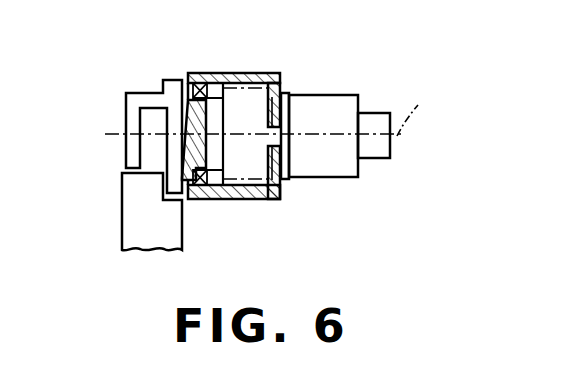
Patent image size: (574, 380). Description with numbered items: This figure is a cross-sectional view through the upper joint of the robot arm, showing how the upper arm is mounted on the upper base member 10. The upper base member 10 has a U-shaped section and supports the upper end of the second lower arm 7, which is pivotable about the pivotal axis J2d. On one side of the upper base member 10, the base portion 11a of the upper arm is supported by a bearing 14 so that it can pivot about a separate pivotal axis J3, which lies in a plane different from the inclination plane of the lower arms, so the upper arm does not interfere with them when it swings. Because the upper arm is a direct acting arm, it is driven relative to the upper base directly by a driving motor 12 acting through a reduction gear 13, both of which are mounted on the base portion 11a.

The second lower arm 7 is at (122, 215).
The upper base member 10 is at (138, 92).
The base portion of upper arm 11a is at (233, 73).
The driving motor 12 is at (328, 177).
The reduction gear 13 is at (237, 173).
The bearing 14 is at (199, 82).
The pivotal axis J2d is at (112, 134).
The pivotal axis J3 is at (423, 115).